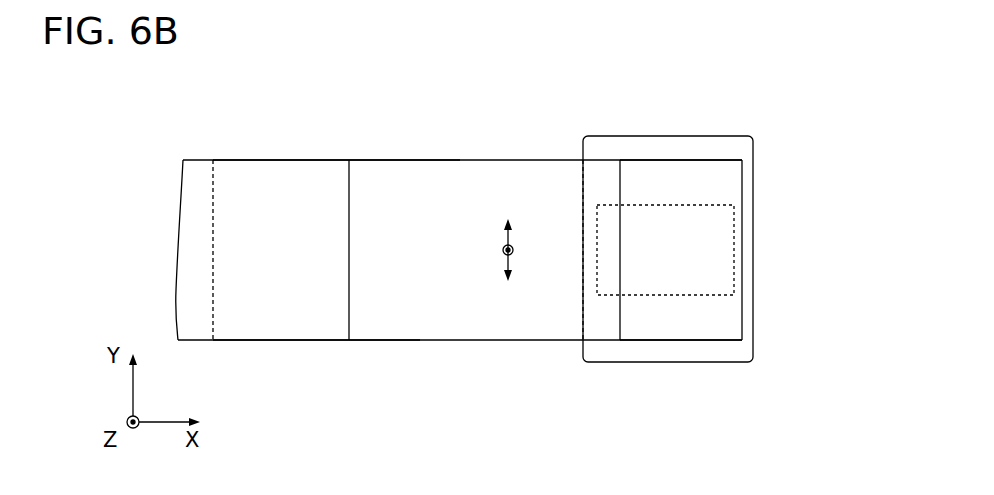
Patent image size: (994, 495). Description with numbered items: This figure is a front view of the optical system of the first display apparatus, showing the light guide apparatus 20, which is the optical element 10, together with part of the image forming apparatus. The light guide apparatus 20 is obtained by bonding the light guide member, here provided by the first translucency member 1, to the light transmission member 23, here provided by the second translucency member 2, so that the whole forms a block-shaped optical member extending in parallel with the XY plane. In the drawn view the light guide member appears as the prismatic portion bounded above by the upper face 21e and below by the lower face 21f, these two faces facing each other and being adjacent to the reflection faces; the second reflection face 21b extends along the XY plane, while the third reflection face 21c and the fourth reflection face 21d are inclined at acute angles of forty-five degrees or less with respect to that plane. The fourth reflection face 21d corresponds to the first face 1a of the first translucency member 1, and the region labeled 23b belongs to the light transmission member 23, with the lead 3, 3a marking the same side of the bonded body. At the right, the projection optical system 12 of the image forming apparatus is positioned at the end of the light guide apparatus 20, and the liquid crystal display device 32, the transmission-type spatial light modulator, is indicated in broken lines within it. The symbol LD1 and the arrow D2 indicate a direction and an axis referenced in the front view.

The light guide apparatus 20 is at (383, 263).
The optical element 10 is at (383, 263).
The first translucency member 1 is at (383, 263).
The light transmission member 23 is at (257, 202).
The second translucency member 2 is at (202, 146).
The surface of base portion 23b is at (277, 183).
The substrate 3 is at (285, 376).
The substrate surface 3a is at (285, 376).
The fourth reflection face 21d is at (285, 376).
The first face 1a is at (285, 317).
The second reflection face 21b is at (412, 298).
The upper face 21e is at (395, 158).
The lower face 21f is at (365, 340).
The second direction D2 is at (512, 240).
The first axis (lens direction) LD1 is at (503, 262).
The projection optical system 12 is at (691, 239).
The third reflection face 21c is at (664, 319).
The liquid crystal display device 32 is at (707, 206).